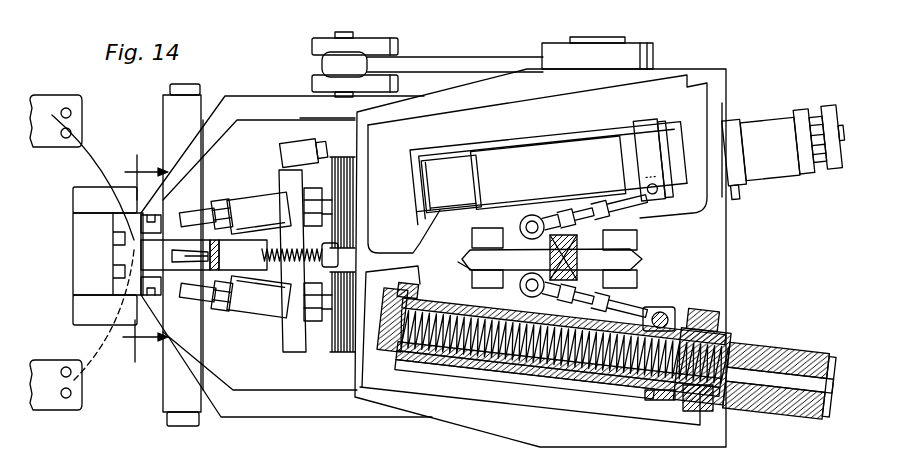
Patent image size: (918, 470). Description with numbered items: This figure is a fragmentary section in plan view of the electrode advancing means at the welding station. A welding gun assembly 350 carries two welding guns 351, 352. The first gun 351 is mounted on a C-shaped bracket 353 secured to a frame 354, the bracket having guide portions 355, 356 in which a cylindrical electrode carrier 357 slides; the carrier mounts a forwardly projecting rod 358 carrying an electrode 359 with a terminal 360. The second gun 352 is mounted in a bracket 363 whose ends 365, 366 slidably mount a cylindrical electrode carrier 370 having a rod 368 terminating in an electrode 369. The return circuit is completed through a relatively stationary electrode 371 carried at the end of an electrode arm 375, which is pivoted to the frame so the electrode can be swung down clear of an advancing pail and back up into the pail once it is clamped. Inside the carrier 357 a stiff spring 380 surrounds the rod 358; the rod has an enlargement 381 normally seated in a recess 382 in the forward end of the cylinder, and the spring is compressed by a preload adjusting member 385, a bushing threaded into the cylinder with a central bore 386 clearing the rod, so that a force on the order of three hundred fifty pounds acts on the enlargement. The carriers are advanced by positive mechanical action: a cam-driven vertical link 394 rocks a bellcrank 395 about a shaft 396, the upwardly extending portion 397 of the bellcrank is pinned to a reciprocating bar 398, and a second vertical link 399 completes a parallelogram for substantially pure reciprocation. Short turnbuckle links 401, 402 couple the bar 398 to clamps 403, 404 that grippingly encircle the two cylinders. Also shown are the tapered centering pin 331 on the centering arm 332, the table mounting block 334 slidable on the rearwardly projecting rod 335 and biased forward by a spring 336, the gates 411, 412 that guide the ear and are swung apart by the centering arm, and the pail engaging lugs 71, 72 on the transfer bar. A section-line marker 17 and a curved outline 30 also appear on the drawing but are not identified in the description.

The section line 17 is at (140, 253).
The arcuate path 30 is at (90, 143).
The pail engaging lug 71 is at (80, 387).
The pail engaging lug 72 is at (80, 105).
The tapered centering pin 331 is at (175, 255).
The positioning arm 332 is at (238, 255).
The mounting block 334 is at (259, 297).
The rearwardly projecting rod 335 is at (333, 262).
The spring 336 is at (259, 213).
The welding gun assembly 350 is at (718, 69).
The first welding gun 351 is at (758, 407).
The second welding gun 352 is at (778, 110).
The bracket 353 is at (578, 418).
The frame 354 is at (490, 433).
The guide portion 355 is at (737, 337).
The guide portion 356 is at (427, 292).
The cylindrical electrode carrier 357 is at (510, 368).
The rod 358 is at (475, 350).
The electrode 359 is at (214, 300).
The terminal 360 is at (300, 360).
The bracket 363 is at (532, 110).
The bracket end 365 is at (728, 210).
The bracket end 366 is at (408, 190).
The rod 368 is at (312, 186).
The electrode 369 is at (214, 210).
The cylindrical electrode carrier 370 is at (300, 108).
The stationary electrode 371 is at (82, 267).
The electrode arm 375 is at (262, 418).
The spring 380 is at (614, 390).
The enlargement 381 is at (393, 355).
The recess 382 is at (417, 320).
The preload adjusting member 385 is at (830, 347).
The central bore 386 is at (806, 408).
The vertical link 394 is at (322, 66).
The bellcrank 395 is at (450, 58).
The shaft 396 is at (602, 38).
The upwardly extending portion 397 is at (640, 274).
The reciprocating bar 398 is at (644, 258).
The second vertical link 399 is at (478, 243).
The short link 401 is at (645, 310).
The short link 402 is at (583, 208).
The clamp 403 is at (655, 394).
The clamp 404 is at (646, 162).
The gate 411 is at (140, 213).
The gate 412 is at (140, 300).